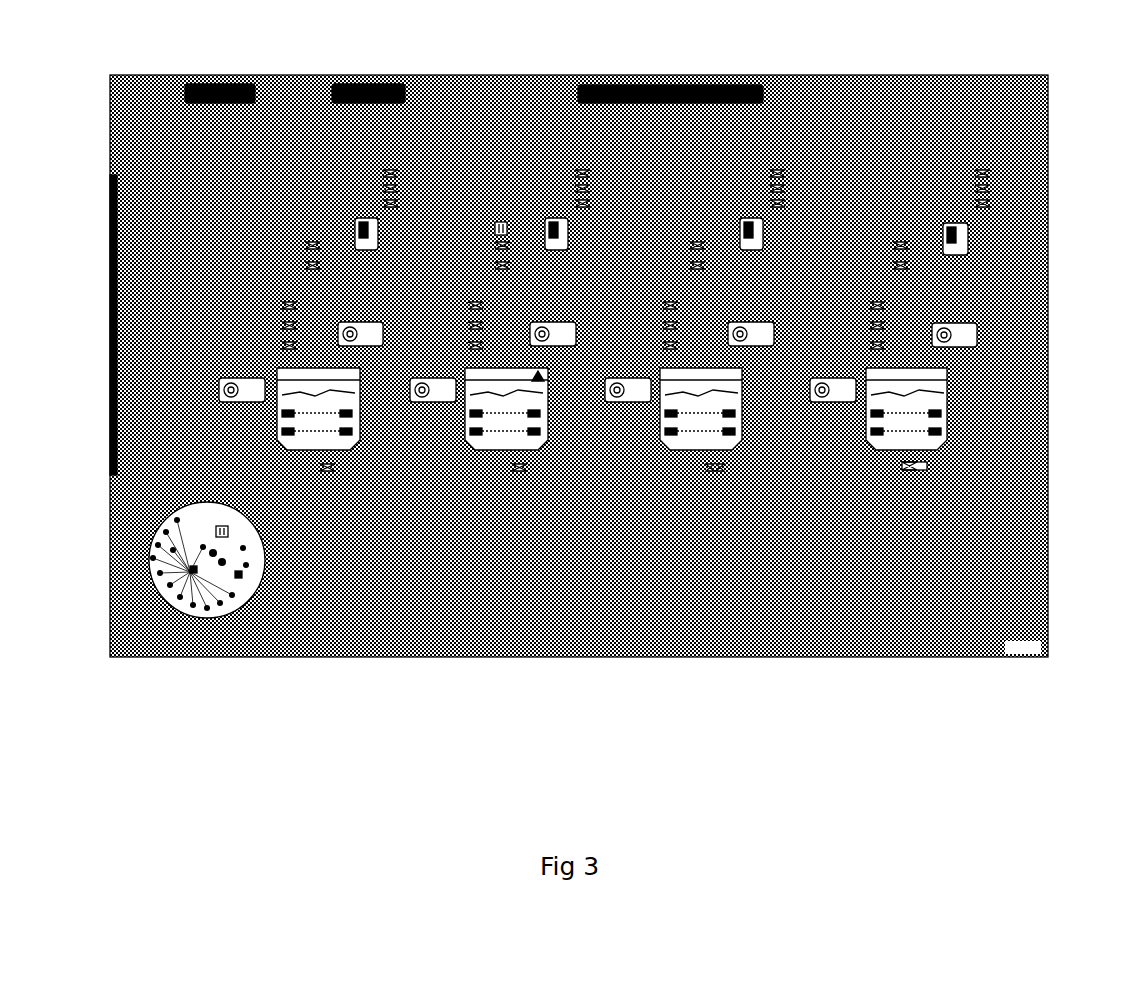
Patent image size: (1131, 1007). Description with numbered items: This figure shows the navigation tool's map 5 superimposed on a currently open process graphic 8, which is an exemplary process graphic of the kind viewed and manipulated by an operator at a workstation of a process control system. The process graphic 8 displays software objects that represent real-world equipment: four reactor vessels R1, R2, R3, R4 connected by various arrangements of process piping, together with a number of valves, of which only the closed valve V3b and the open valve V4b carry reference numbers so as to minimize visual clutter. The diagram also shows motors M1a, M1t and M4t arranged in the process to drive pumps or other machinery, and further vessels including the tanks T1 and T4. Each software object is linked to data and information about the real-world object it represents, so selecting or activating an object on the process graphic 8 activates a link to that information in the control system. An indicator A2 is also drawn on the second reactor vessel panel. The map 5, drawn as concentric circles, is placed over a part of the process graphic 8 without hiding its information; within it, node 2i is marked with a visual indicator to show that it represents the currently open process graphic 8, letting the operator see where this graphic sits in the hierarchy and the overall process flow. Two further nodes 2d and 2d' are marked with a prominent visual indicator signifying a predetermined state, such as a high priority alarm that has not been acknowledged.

The process graphic 8 is at (558, 351).
The tank T1 is at (335, 237).
The motor M1t is at (337, 335).
The motor M1a is at (213, 387).
The reactor vessel R1 is at (257, 435).
The map 5 is at (167, 502).
The node 2d is at (128, 589).
The node 2d' is at (267, 634).
The node 2i is at (230, 533).
The reactor vessel R2 is at (555, 457).
The alarm indicator 2 A2 is at (550, 375).
The closed valve V3b is at (715, 475).
The reactor vessel R3 is at (750, 437).
The open valve V4b is at (931, 475).
The reactor vessel R4 is at (949, 386).
The motor M4t is at (988, 337).
The tank T4 is at (977, 239).